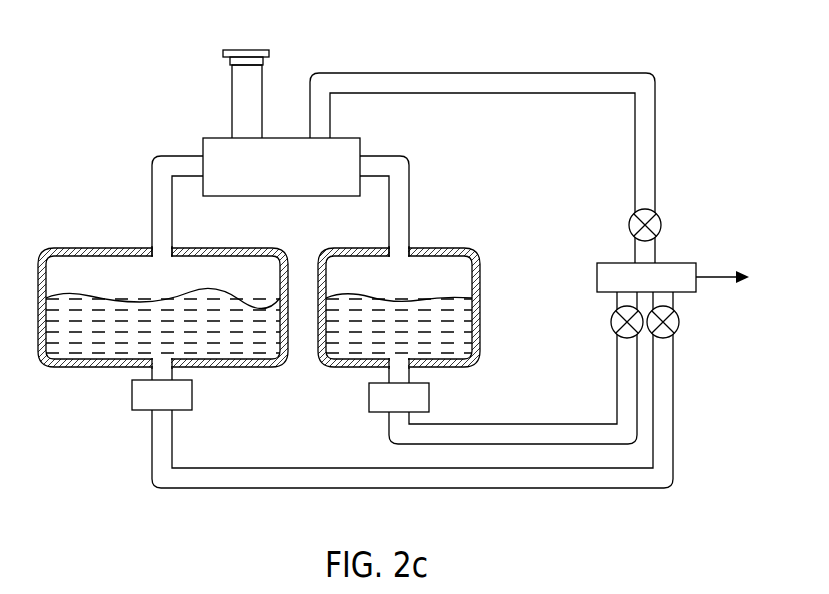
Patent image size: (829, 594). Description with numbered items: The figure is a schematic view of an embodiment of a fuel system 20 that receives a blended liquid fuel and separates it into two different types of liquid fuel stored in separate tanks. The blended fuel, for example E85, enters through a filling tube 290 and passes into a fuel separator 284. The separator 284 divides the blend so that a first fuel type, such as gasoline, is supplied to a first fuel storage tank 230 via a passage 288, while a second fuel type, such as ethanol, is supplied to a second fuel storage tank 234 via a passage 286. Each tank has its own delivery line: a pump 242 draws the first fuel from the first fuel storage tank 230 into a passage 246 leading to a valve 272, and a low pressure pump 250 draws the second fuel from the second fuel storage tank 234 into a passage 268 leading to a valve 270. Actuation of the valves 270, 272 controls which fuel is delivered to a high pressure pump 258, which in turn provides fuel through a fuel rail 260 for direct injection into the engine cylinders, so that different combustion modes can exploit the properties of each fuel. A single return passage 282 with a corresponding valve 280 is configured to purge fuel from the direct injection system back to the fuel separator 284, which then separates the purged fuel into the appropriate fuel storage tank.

The fuel system 20 is at (425, 45).
The first fuel storage tank 230 is at (77, 248).
The second fuel storage tank 234 is at (370, 250).
The pump 242 is at (192, 392).
The passage 246 is at (172, 445).
The low pressure pump 250 is at (430, 397).
The high pressure pump 258 is at (597, 273).
The fuel rail 260 is at (712, 273).
The passage 268 is at (527, 423).
The valve 270 is at (611, 323).
The valve 272 is at (679, 323).
The valve 280 is at (661, 224).
The return passage 282 is at (656, 136).
The fuel separator 284 is at (362, 139).
The passage 286 is at (410, 182).
The passage 288 is at (152, 175).
The filling tube 290 is at (231, 88).